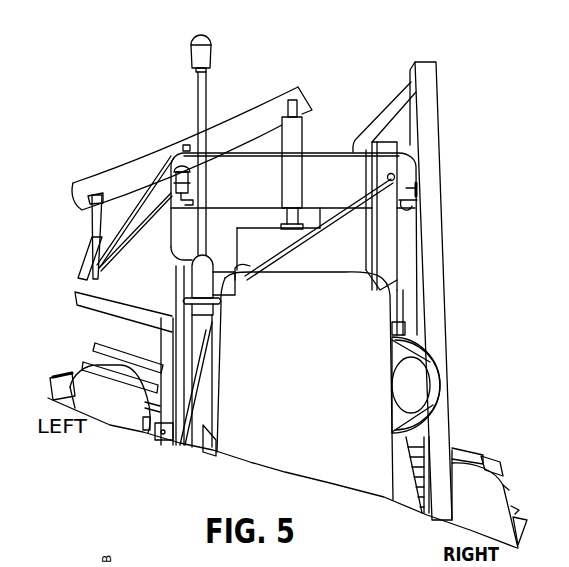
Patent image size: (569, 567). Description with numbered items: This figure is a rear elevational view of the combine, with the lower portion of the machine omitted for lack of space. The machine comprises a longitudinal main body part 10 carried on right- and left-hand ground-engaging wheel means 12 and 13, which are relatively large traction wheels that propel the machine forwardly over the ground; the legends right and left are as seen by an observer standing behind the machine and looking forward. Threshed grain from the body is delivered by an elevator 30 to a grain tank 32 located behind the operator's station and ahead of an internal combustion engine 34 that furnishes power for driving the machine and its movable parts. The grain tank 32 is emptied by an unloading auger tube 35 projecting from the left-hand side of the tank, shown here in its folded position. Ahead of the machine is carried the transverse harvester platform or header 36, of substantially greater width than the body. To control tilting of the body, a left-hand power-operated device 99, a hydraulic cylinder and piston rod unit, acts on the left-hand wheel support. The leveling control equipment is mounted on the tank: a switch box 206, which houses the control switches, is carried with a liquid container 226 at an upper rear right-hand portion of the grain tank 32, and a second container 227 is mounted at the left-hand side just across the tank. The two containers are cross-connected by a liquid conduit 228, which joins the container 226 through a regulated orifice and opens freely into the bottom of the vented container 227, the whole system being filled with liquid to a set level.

The main body part 10 is at (285, 471).
The right-hand ground-engaging wheel means 12 is at (497, 502).
The left-hand ground-engaging wheel means 13 is at (85, 375).
The elevator 30 is at (433, 158).
The grain tank 32 is at (322, 163).
The internal combustion engine 34 is at (255, 229).
The unloading auger tube 35 is at (80, 289).
The harvester platform or header 36 is at (523, 524).
The left-hand power-operated device 99 is at (156, 333).
The switch box 206 is at (410, 188).
The liquid container 226 is at (413, 203).
The second container 227 is at (186, 190).
The liquid conduit 228 is at (255, 205).